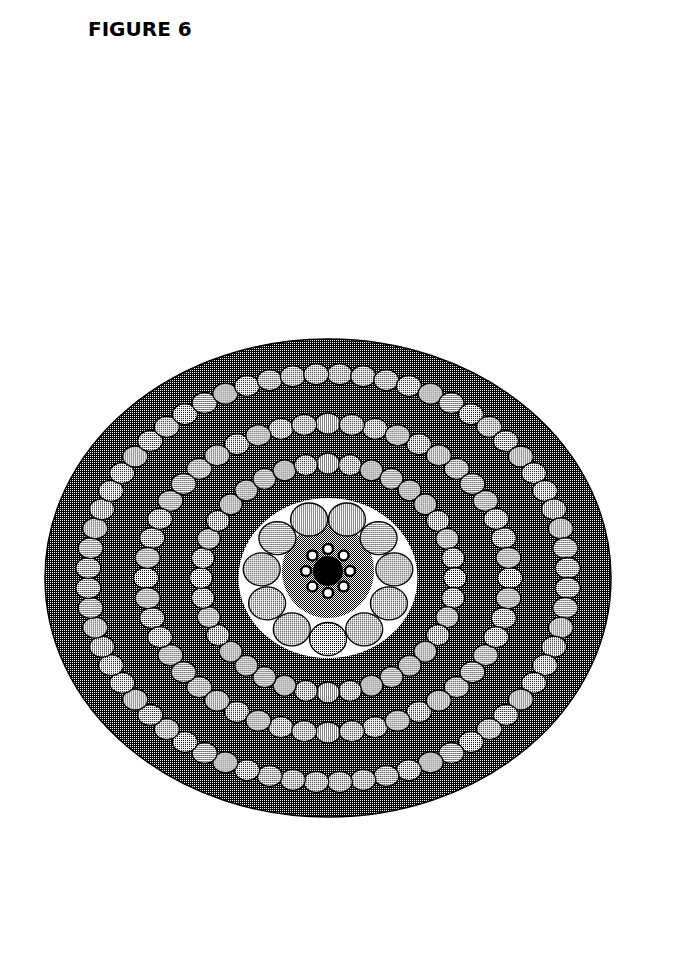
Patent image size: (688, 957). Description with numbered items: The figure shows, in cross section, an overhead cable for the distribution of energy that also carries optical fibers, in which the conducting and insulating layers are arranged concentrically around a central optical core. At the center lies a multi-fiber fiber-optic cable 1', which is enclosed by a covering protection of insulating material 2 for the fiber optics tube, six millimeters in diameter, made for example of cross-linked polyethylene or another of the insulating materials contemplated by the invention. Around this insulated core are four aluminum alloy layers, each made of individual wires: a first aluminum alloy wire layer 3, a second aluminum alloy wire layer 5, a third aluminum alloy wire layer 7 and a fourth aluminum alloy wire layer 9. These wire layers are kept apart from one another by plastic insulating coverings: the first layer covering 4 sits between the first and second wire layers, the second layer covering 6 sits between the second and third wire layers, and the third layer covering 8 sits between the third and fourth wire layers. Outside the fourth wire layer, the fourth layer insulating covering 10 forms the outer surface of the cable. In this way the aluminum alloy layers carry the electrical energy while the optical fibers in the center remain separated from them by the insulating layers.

The multi-fiber fiber-optic cable 1' is at (328, 456).
The covering protection of insulating material 2 is at (363, 350).
The first aluminum alloy wire layer 3 is at (306, 513).
The first layer covering 4 is at (257, 512).
The second aluminum alloy wire layer 5 is at (222, 502).
The second layer covering 6 is at (185, 513).
The third aluminum alloy wire layer 7 is at (148, 543).
The third layer covering 8 is at (113, 543).
The fourth aluminum alloy wire layer 9 is at (88, 543).
The fourth layer insulating covering 10 is at (63, 543).